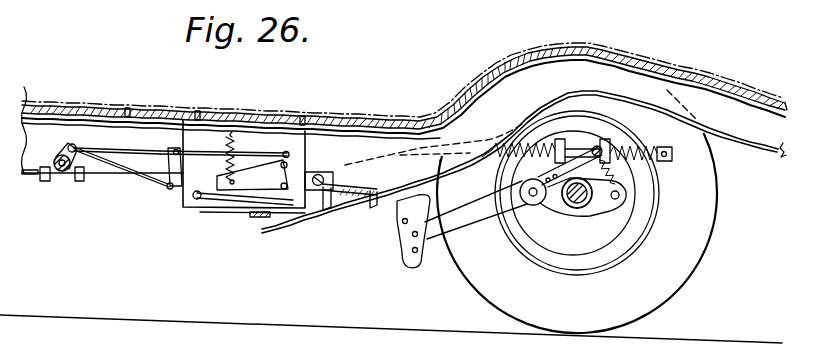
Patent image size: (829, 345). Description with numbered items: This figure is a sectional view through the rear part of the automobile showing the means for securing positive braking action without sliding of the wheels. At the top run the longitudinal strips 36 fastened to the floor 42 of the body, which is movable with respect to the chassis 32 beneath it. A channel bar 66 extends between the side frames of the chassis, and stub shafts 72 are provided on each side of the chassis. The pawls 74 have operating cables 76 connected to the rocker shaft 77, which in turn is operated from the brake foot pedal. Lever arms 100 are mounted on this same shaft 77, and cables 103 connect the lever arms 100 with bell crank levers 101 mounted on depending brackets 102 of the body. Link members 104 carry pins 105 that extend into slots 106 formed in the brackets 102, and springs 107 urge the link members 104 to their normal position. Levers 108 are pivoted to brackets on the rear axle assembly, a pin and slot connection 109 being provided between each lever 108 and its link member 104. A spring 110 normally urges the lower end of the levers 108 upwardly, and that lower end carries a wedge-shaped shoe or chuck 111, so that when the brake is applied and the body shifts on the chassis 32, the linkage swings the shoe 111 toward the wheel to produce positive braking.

The chassis 32 is at (750, 153).
The longitudinal strips 36 is at (520, 62).
The floor of the body 42 is at (330, 113).
The channel bar 66 is at (373, 198).
The stub shafts 72 is at (320, 177).
The pawls 74 is at (158, 156).
The operating cables 76 is at (118, 167).
The rocker shaft 77 is at (62, 177).
The lever arms 100 is at (50, 140).
The bell crank levers 101 is at (247, 186).
The depending brackets 102 is at (263, 137).
The cables 103 is at (128, 150).
The link members 104 is at (313, 215).
The pins 105 is at (197, 197).
The slots 106 is at (277, 198).
The springs 107 is at (515, 140).
The levers 108 is at (486, 210).
The pin and slot connection 109 is at (595, 139).
The spring 110 is at (605, 208).
The wedge-shaped shoe or chuck 111 is at (417, 264).